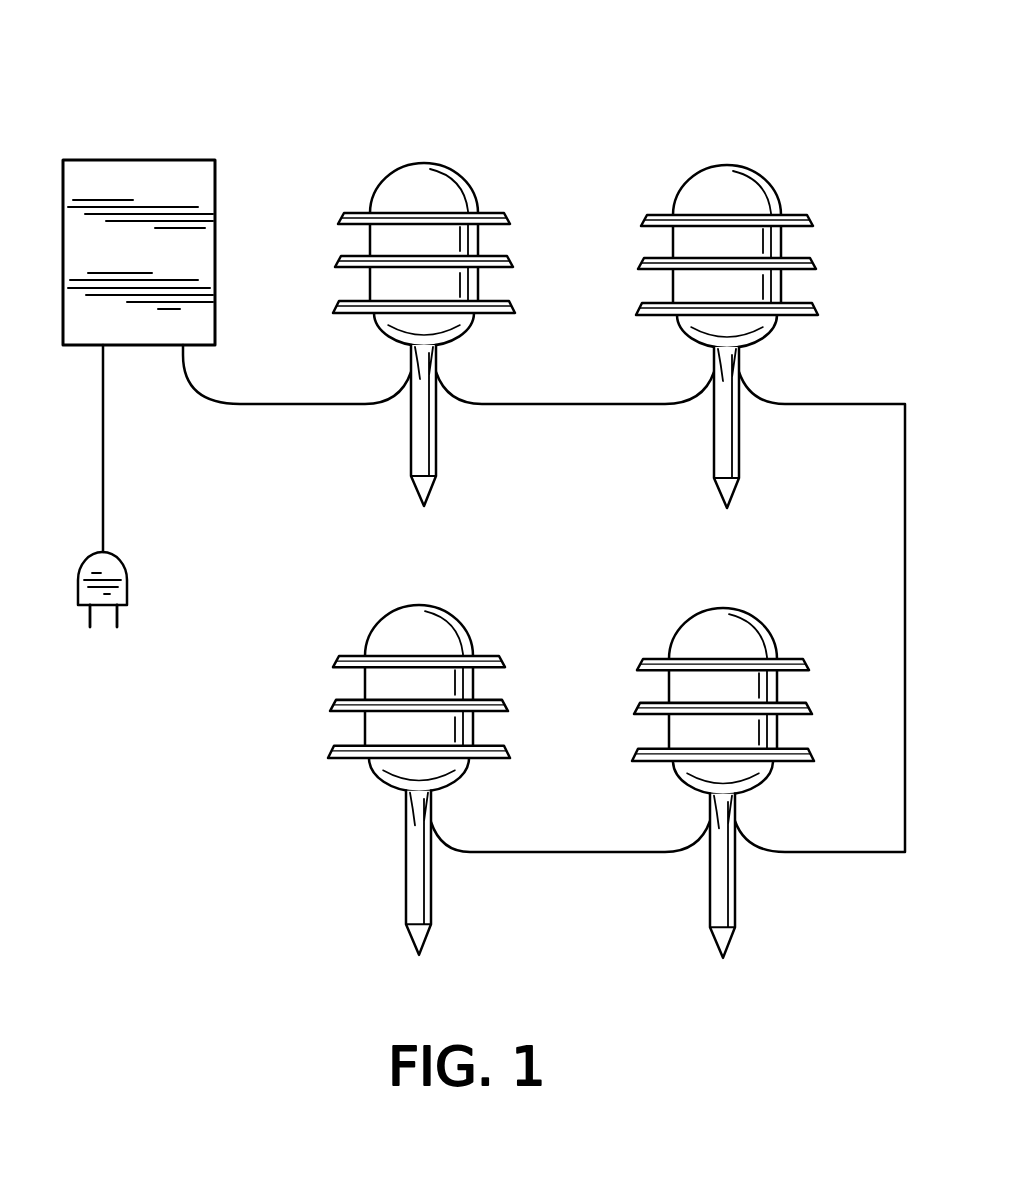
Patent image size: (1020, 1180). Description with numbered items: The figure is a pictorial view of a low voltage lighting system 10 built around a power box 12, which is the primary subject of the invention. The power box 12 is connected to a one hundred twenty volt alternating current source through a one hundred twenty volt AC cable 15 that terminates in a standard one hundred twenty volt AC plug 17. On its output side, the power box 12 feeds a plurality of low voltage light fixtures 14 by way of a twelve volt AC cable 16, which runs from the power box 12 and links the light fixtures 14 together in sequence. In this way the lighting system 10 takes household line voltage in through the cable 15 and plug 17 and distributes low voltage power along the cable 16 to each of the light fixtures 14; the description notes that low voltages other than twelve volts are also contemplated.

The low voltage lighting system 10 is at (500, 94).
The power box 12 is at (209, 153).
The low voltage light fixtures 14 is at (467, 183).
The 120 VAC cable 15 is at (105, 465).
The 12 VAC cable 16 is at (560, 404).
The 120 VAC plug 17 is at (127, 577).